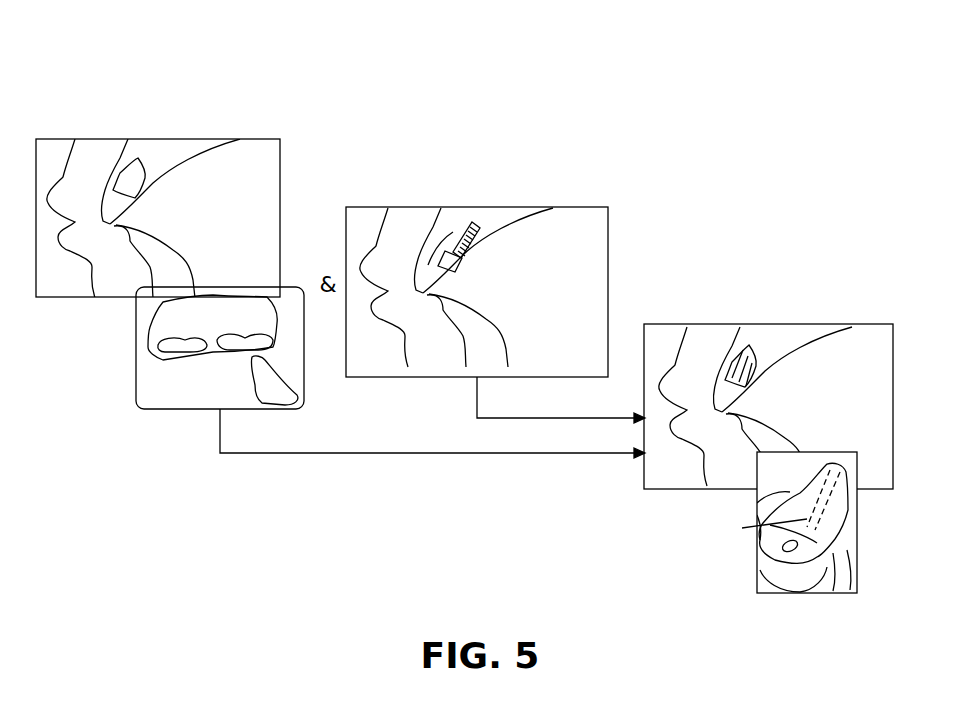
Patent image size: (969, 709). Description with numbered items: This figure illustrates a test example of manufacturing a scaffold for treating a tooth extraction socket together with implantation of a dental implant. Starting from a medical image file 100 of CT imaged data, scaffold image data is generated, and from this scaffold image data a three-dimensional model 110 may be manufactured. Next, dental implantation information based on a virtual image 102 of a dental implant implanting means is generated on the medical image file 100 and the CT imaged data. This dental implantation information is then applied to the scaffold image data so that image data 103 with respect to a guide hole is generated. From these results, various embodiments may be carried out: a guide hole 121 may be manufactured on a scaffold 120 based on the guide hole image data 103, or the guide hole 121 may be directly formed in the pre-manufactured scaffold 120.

The medical image file 100 is at (230, 140).
The virtual image of a dental implant implanting means 102 is at (478, 222).
The image data with respect to a guide hole 103 is at (763, 347).
The 3D model 110 is at (188, 325).
The scaffold 120 is at (828, 530).
The guide hole 121 is at (742, 528).